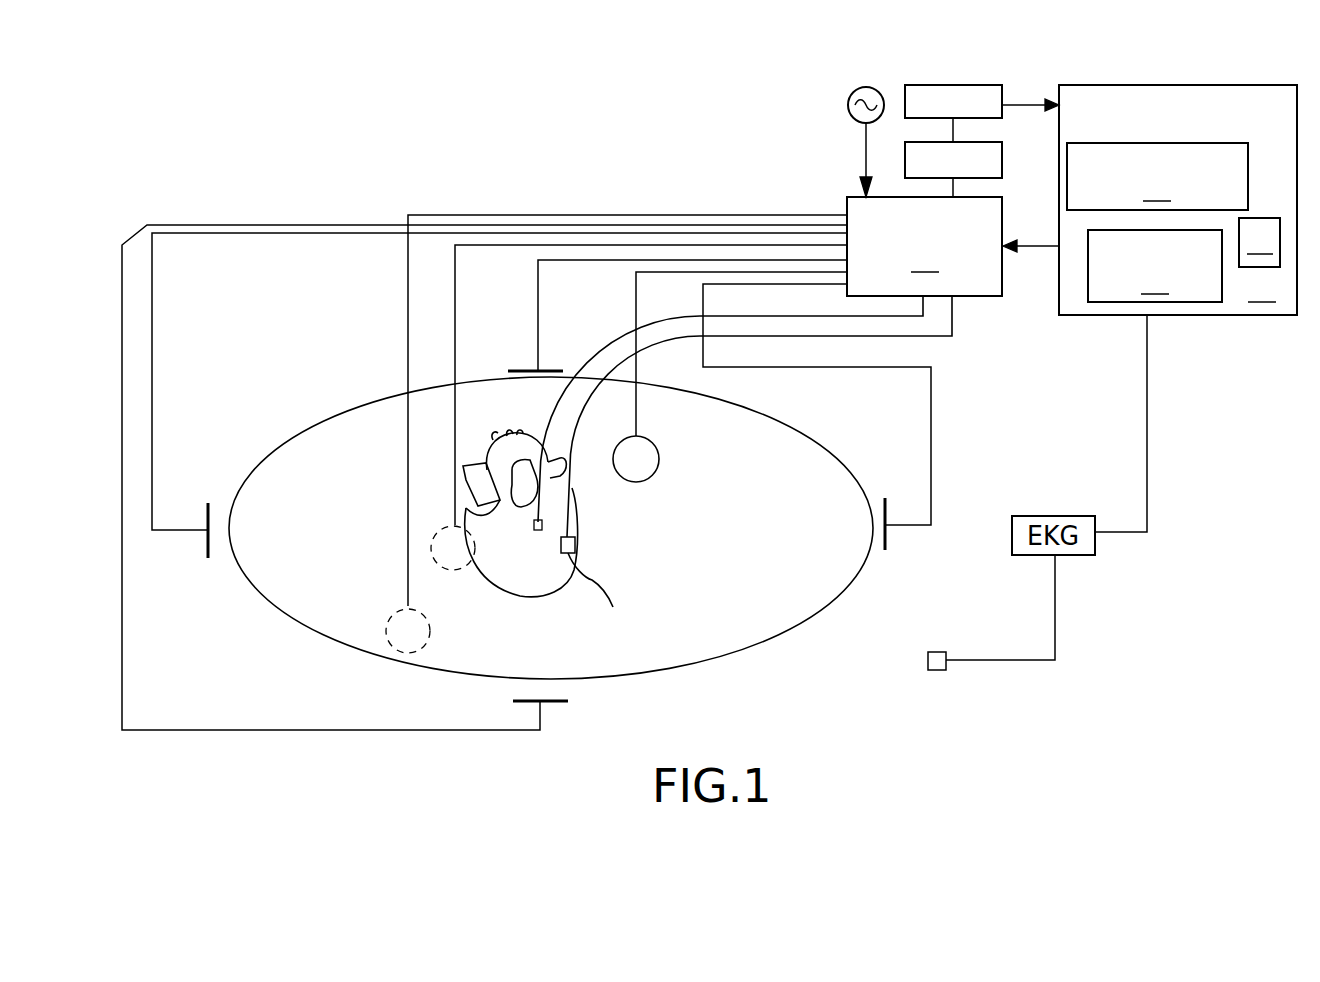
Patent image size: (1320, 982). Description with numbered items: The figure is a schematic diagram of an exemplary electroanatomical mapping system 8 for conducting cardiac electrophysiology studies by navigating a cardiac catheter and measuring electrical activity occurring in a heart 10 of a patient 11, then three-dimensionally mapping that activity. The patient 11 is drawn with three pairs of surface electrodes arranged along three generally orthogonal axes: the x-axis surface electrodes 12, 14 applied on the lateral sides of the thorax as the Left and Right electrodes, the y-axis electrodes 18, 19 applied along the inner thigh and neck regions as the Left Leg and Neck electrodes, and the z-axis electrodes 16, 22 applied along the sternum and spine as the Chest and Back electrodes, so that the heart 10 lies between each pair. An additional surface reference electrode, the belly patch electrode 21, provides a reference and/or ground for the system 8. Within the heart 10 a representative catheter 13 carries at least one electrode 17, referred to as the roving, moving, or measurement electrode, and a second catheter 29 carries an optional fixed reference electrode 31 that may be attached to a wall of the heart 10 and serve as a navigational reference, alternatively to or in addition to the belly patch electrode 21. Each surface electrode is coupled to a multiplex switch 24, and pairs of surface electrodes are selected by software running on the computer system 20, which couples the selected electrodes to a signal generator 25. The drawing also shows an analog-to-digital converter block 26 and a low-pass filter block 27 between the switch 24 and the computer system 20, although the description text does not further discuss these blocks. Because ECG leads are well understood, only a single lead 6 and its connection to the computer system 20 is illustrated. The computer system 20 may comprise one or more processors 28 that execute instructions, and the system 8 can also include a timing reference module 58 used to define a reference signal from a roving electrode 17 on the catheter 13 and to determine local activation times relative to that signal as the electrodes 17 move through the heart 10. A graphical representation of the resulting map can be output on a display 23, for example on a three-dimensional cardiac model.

The electroanatomical mapping system 8 is at (204, 128).
The signal generator 25 is at (850, 92).
The analog to digital converter 26 is at (970, 85).
The low pass filter 27 is at (1003, 150).
The multiplex switch 24 is at (924, 246).
The computer system 20 is at (1150, 200).
The processor 28 is at (1157, 176).
The display 23 is at (1155, 266).
The timing reference module 58 is at (1259, 242).
The ECG lead 6 is at (937, 672).
The patient 11 is at (787, 425).
The belly patch electrode 21 is at (407, 544).
The x-axis surface electrode 14 is at (543, 707).
The y-axis surface electrode 18 is at (207, 543).
The z-axis surface electrode 22 is at (456, 298).
The x-axis surface electrode 12 is at (531, 368).
The z-axis surface electrode 16 is at (637, 408).
The y-axis surface electrode 19 is at (886, 535).
The second catheter 29 is at (551, 400).
The fixed reference electrode 31 is at (537, 532).
The catheter 13 is at (952, 320).
The heart 10 is at (578, 546).
The catheter electrode 17 is at (600, 593).